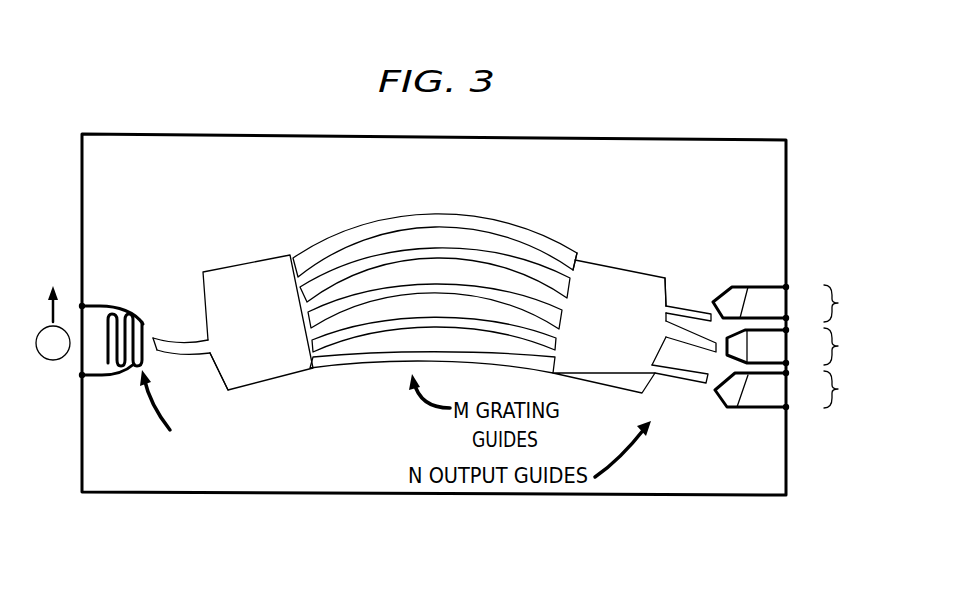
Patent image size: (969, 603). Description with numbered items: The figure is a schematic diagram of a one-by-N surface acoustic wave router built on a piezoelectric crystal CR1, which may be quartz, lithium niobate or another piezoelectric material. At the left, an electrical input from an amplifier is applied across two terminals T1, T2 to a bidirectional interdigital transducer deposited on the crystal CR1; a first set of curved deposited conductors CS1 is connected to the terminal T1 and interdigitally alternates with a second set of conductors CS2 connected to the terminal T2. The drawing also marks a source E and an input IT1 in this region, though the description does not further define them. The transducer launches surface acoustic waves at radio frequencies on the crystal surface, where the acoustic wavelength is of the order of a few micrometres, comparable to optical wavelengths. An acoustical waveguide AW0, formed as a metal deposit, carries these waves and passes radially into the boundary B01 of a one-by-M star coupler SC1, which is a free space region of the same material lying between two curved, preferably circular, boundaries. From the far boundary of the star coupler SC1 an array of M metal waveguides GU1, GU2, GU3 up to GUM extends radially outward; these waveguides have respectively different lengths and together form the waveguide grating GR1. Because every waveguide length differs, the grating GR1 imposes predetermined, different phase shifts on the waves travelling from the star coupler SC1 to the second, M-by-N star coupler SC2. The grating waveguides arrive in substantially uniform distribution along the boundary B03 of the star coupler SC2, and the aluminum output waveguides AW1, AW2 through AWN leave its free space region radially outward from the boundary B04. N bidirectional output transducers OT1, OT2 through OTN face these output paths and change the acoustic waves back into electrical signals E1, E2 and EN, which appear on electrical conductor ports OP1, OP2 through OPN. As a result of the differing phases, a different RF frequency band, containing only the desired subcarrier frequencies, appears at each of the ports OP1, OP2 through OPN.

The piezoelectric crystal CR1 is at (163, 493).
The optical source E is at (53, 323).
The terminal T1 is at (81, 304).
The terminal T2 is at (82, 376).
The first set of curved deposited conductors CS1 is at (150, 314).
The second set of conductors CS2 is at (121, 377).
The input transducer IT1 is at (161, 416).
The acoustical waveguide AW0 is at (192, 336).
The 1×M star coupler SC1 is at (263, 256).
The boundary B01 is at (212, 364).
The metal waveguide GU1 is at (323, 238).
The metal waveguide GU2 is at (387, 254).
The metal waveguide GU3 is at (462, 288).
The metal waveguide GUM is at (363, 366).
The waveguide grating GR1 is at (510, 245).
The boundary B03 is at (557, 258).
The M×N star coupler SC2 is at (608, 262).
The boundary B04 is at (674, 292).
The acoustical waveguide AW1 is at (686, 309).
The acoustical waveguide AW2 is at (662, 351).
The acoustical waveguide AWN is at (687, 381).
The bidirectional output transducer OT1 is at (716, 296).
The bidirectional output transducer OT2 is at (741, 316).
The bidirectional output transducer OTN is at (733, 393).
The electrical signal E1 is at (805, 306).
The electrical signal E2 is at (805, 348).
The electrical signal EN is at (805, 391).
The electrical conductor port OP1 is at (791, 271).
The electrical conductor port OP2 is at (800, 346).
The electrical conductor port OPN is at (795, 412).